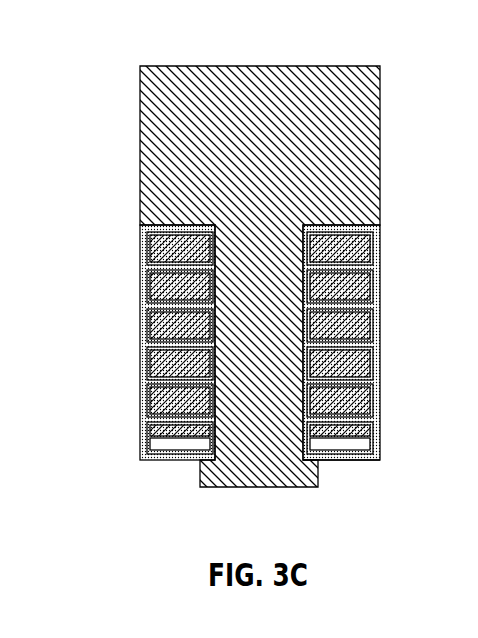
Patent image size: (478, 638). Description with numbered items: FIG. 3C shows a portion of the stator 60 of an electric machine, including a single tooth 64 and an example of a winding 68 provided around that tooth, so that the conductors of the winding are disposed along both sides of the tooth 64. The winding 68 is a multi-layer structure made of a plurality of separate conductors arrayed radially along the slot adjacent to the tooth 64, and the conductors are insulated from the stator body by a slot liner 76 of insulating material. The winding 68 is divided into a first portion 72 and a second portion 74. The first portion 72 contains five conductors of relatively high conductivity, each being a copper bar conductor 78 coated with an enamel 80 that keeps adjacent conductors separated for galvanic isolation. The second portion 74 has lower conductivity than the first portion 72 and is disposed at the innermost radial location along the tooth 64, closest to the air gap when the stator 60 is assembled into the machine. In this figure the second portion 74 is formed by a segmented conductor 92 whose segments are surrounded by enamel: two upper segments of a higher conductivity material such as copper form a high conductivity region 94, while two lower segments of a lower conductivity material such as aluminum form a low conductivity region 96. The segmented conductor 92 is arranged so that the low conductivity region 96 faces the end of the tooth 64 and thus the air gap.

The stator 60 is at (280, 259).
The tooth 64 is at (315, 66).
The winding 68 is at (120, 354).
The first portion 72 is at (384, 370).
The second portion 74 is at (383, 440).
The slot liner 76 is at (163, 232).
The copper bar conductor 78 is at (171, 292).
The enamel 80 is at (350, 233).
The segmented conductor 92 is at (370, 466).
The high conductivity region 94 is at (180, 478).
The low conductivity region 96 is at (353, 446).